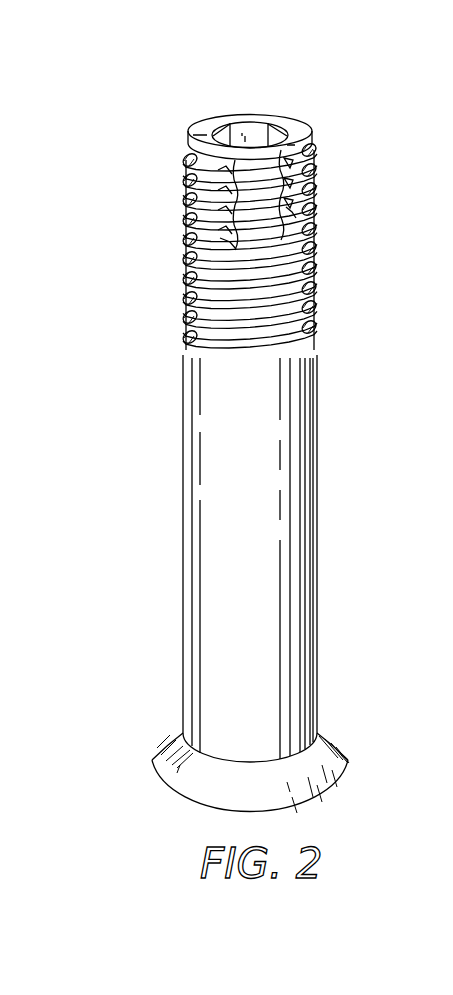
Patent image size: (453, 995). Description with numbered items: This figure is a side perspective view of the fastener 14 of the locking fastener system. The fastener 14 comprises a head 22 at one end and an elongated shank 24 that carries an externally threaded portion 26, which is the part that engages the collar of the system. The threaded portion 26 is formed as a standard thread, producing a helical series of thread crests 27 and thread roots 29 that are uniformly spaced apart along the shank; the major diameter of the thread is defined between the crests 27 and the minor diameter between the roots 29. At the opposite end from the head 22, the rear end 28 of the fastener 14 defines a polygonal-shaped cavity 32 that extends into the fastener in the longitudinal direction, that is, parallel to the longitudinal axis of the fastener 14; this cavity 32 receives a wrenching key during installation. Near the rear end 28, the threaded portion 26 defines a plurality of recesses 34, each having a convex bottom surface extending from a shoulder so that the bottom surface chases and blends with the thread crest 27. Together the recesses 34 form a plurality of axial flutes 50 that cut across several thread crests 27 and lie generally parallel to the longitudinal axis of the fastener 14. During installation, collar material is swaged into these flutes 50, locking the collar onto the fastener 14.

The fastener 14 is at (372, 102).
The head 22 is at (333, 770).
The elongated shank 24 is at (303, 503).
The externally threaded portion 26 is at (313, 283).
The thread crest 27 is at (314, 268).
The rear end 28 is at (293, 124).
The thread root 29 is at (313, 247).
The polygonal-shaped cavity 32 is at (223, 134).
The recess 34 is at (290, 211).
The axial flute 50 is at (288, 174).